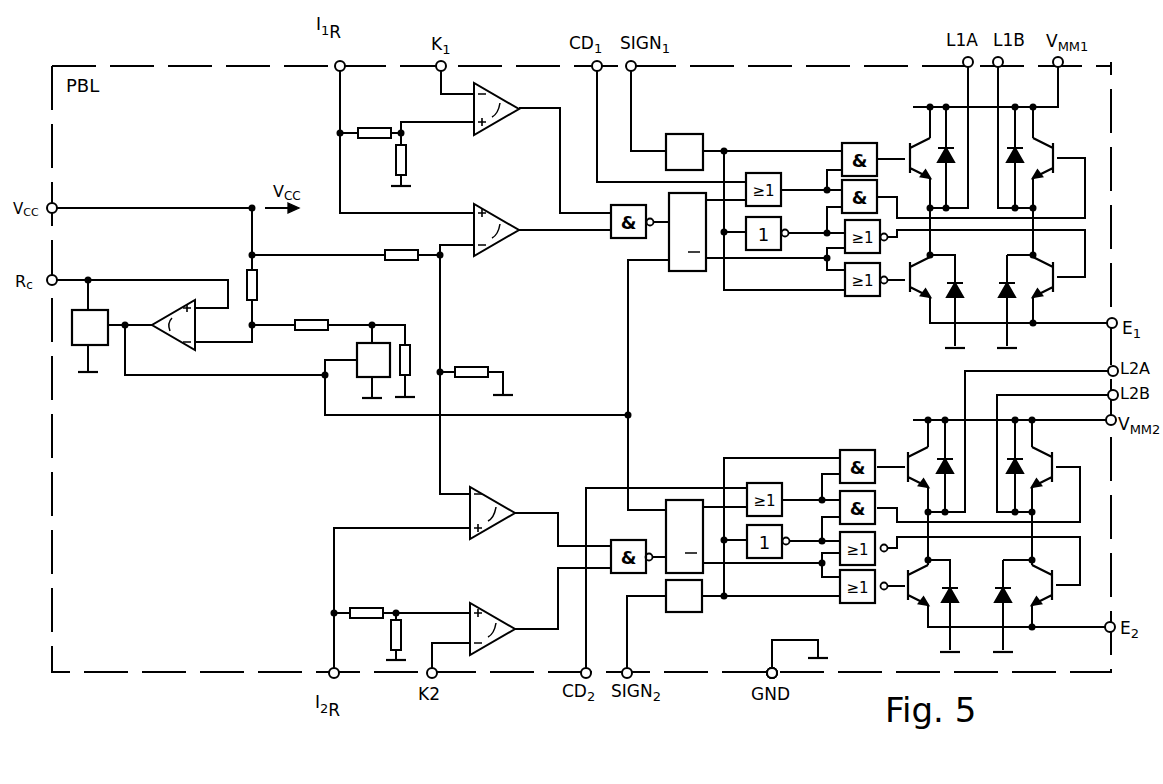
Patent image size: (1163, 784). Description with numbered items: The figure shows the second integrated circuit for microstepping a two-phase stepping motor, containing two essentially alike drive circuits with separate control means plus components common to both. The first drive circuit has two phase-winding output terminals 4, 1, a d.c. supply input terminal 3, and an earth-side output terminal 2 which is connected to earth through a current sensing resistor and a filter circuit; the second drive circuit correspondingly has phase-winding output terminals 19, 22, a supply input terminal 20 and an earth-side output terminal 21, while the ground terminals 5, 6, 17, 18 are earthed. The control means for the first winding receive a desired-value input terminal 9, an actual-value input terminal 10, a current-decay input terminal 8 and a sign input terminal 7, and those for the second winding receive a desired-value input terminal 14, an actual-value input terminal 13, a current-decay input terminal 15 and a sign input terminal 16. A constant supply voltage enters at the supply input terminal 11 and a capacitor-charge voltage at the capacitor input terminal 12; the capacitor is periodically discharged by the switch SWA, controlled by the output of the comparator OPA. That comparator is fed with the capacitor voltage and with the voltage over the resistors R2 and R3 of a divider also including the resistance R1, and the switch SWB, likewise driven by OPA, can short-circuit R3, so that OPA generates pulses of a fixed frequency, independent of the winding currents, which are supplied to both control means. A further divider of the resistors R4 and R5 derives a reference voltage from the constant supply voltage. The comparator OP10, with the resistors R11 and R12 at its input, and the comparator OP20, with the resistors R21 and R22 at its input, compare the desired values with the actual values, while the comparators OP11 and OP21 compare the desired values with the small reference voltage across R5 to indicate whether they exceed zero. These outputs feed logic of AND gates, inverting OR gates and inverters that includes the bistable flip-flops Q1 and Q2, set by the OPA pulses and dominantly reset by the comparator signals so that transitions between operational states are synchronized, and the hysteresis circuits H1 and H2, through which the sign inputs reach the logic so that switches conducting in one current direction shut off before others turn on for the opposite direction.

The terminal L1B 1 is at (995, 70).
The terminal E1 2 is at (1107, 313).
The terminal VMM1 3 is at (1052, 70).
The terminal L1A 4 is at (962, 70).
The ground terminal GND 5 is at (730, 666).
The ground terminal GND 6 is at (772, 673).
The terminal SIGN1 7 is at (625, 74).
The terminal CD1 8 is at (590, 74).
The terminal I1R 9 is at (333, 74).
The terminal K1 10 is at (433, 74).
The terminal Vcc 11 is at (62, 200).
The terminal Rc 12 is at (62, 272).
The terminal K2 13 is at (423, 665).
The terminal I2R 14 is at (324, 665).
The terminal CD2 15 is at (577, 665).
The terminal SIGN2 16 is at (619, 665).
The ground terminal GND 17 is at (772, 673).
The ground terminal GND 18 is at (772, 673).
The terminal L2A 19 is at (1102, 362).
The terminal VMM2 20 is at (1100, 412).
The terminal E2 21 is at (1100, 618).
The terminal L2B 22 is at (1102, 386).
The resistance R1 is at (265, 285).
The resistor R2 is at (311, 315).
The resistor R3 is at (418, 360).
The voltage divider resistor R4 is at (401, 245).
The voltage divider resistor R5 is at (471, 362).
The resistor R11 is at (374, 121).
The resistor R12 is at (417, 160).
The resistor R21 is at (366, 602).
The resistor R22 is at (411, 635).
The comparator OP10 is at (507, 105).
The comparator OP11 is at (503, 220).
The comparator OP20 is at (500, 618).
The comparator OP21 is at (501, 502).
The comparator OPA is at (172, 336).
The switch SWA is at (90, 327).
The switch SWB is at (356, 358).
The bistable flip-flop Q1 is at (672, 282).
The bistable flip-flop Q2 is at (683, 497).
The hysteresis circuit H1 is at (684, 152).
The hysteresis circuit H2 is at (684, 596).